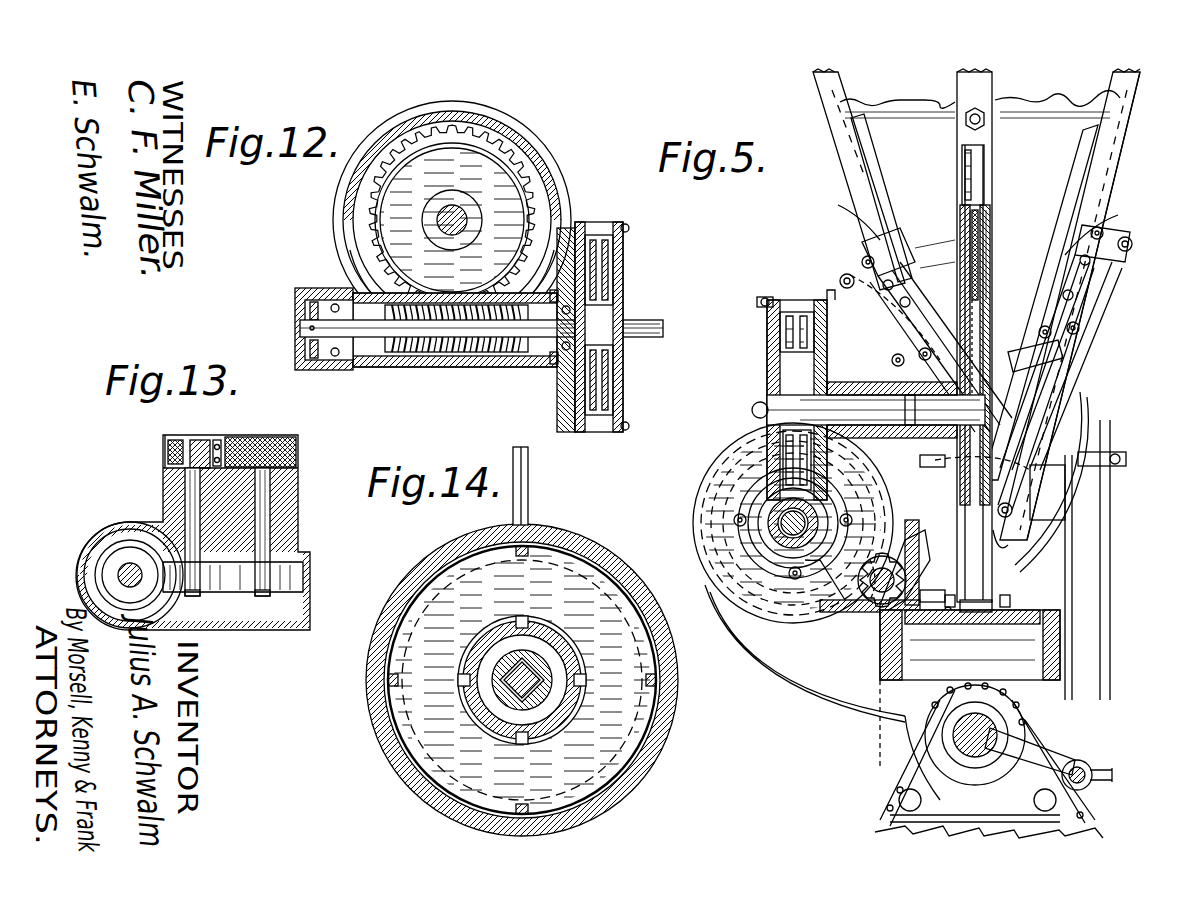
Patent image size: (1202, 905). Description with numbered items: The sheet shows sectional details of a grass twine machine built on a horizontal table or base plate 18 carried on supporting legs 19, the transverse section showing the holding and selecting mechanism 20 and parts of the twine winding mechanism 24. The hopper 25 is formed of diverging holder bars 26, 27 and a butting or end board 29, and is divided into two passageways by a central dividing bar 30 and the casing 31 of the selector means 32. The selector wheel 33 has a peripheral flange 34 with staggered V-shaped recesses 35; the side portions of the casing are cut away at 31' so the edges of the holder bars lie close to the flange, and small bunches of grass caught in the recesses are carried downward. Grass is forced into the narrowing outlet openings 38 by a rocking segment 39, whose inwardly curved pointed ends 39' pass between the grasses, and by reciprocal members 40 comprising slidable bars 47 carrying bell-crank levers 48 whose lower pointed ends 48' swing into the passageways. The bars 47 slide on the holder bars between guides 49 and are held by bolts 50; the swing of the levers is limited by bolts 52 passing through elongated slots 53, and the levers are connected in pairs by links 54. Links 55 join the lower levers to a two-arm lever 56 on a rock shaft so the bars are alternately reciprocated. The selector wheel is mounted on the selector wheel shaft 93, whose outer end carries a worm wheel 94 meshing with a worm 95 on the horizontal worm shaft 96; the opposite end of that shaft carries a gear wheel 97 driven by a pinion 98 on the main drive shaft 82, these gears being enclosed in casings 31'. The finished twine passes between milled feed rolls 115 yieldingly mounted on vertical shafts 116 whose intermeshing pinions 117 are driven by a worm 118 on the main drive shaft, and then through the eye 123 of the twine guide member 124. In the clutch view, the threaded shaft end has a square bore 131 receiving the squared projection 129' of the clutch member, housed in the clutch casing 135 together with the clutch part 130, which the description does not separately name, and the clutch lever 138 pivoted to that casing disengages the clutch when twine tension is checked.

In FIG. 5, the table or base plate 18 is at (1085, 640).
In FIG. 5, the supporting legs or frame members 19 is at (875, 828).
In FIG. 5, the holding and selecting mechanism 20 is at (1115, 180).
In FIG. 14, the twine winding mechanism 24 is at (674, 652).
In FIG. 5, the twine winding mechanism 24 is at (900, 750).
In FIG. 5, the hopper 25 is at (1068, 92).
In FIG. 5, the holder bar 26 is at (935, 162).
In FIG. 5, the holder bar 27 is at (888, 200).
In FIG. 5, the butting or end board 29 is at (930, 90).
In FIG. 5, the central dividing bar 30 is at (985, 140).
In FIG. 5, the casing 31 is at (992, 355).
In FIG. 12, the cut away portions / casings 31' is at (491, 215).
In FIG. 5, the cut away portions / casings 31' is at (790, 523).
In FIG. 5, the selector means 32 is at (958, 216).
In FIG. 5, the selector wheel 33 is at (988, 302).
In FIG. 5, the peripheral flange 34 is at (960, 205).
In FIG. 5, the recesses 35 is at (992, 208).
In FIG. 5, the outlet openings 38 is at (880, 318).
In FIG. 5, the rocking segment 39 is at (935, 237).
In FIG. 5, the pointed ends 39' is at (937, 259).
In FIG. 5, the reciprocal members 40 is at (862, 248).
In FIG. 5, the slidable bars 47 is at (878, 300).
In FIG. 5, the bell-crank levers 48 is at (990, 295).
In FIG. 5, the lower pointed ends 48' is at (1073, 298).
In FIG. 5, the guides 49 is at (838, 205).
In FIG. 5, the bolts 50 is at (908, 302).
In FIG. 5, the bolts 52 is at (840, 284).
In FIG. 5, the elongated slots 53 is at (890, 282).
In FIG. 5, the links 54 is at (880, 335).
In FIG. 5, the links 55 is at (925, 460).
In FIG. 5, the two-arm lever 56 is at (1012, 525).
In FIG. 13, the main drive shaft 82 is at (124, 565).
In FIG. 5, the main drive shaft 82 is at (882, 605).
In FIG. 12, the selector wheel shaft 93 is at (459, 232).
In FIG. 5, the selector wheel shaft 93 is at (765, 412).
In FIG. 12, the worm wheel 94 is at (555, 190).
In FIG. 5, the worm wheel 94 is at (767, 350).
In FIG. 12, the worm 95 is at (400, 353).
In FIG. 5, the worm 95 is at (740, 528).
In FIG. 12, the worm shaft 96 is at (638, 320).
In FIG. 5, the worm shaft 96 is at (760, 545).
In FIG. 5, the gear wheel 97 is at (845, 605).
In FIG. 5, the pinion 98 is at (860, 615).
In FIG. 13, the milled feed rolls 115 is at (262, 435).
In FIG. 13, the vertical shafts 116 is at (262, 490).
In FIG. 13, the intermeshing pinions 117 is at (260, 582).
In FIG. 13, the worm 118 is at (137, 548).
In FIG. 5, the eye 123 is at (1135, 752).
In FIG. 5, the twine guide member 124 is at (1010, 790).
In FIG. 14, the squared projection 129' is at (563, 691).
In FIG. 14, the disk 130 is at (400, 748).
In FIG. 14, the square bore 131 is at (560, 630).
In FIG. 14, the clutch casing 135 is at (580, 688).
In FIG. 14, the clutch lever 138 is at (528, 478).